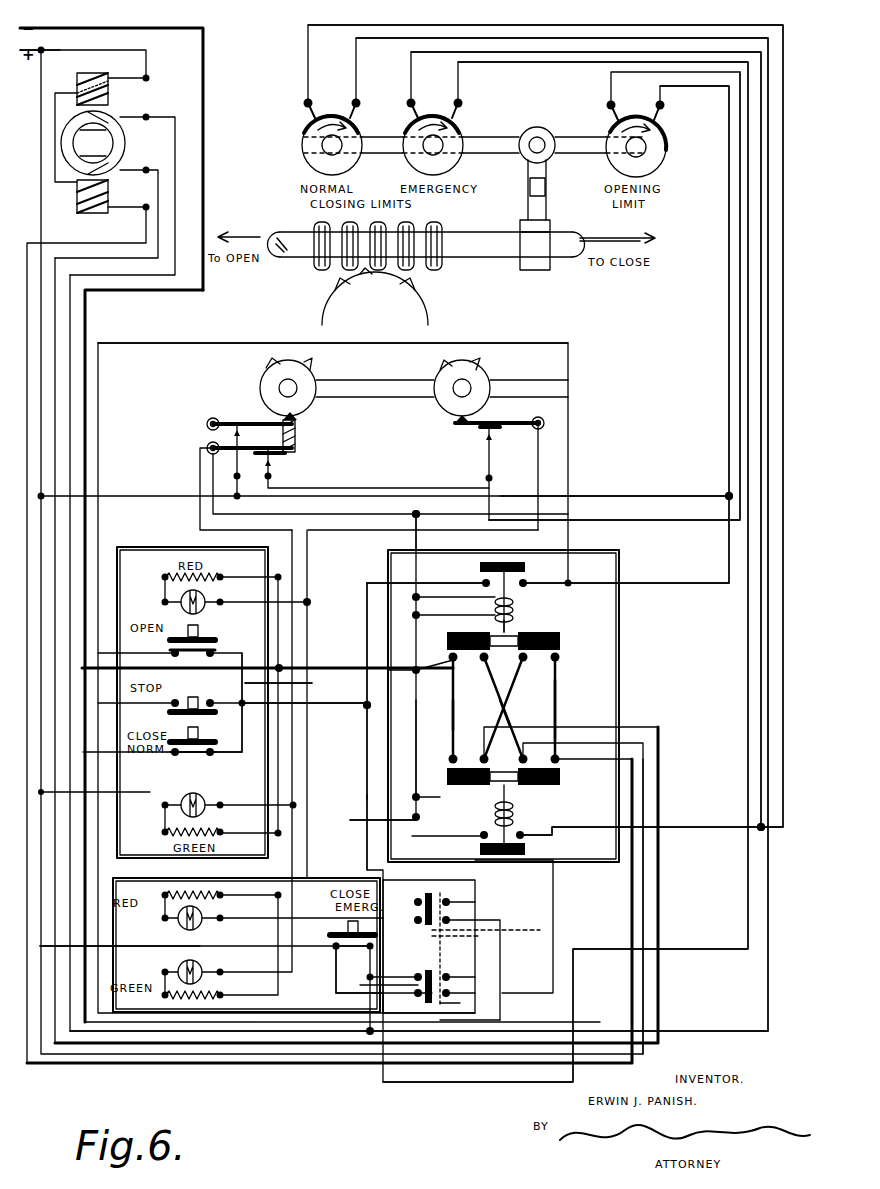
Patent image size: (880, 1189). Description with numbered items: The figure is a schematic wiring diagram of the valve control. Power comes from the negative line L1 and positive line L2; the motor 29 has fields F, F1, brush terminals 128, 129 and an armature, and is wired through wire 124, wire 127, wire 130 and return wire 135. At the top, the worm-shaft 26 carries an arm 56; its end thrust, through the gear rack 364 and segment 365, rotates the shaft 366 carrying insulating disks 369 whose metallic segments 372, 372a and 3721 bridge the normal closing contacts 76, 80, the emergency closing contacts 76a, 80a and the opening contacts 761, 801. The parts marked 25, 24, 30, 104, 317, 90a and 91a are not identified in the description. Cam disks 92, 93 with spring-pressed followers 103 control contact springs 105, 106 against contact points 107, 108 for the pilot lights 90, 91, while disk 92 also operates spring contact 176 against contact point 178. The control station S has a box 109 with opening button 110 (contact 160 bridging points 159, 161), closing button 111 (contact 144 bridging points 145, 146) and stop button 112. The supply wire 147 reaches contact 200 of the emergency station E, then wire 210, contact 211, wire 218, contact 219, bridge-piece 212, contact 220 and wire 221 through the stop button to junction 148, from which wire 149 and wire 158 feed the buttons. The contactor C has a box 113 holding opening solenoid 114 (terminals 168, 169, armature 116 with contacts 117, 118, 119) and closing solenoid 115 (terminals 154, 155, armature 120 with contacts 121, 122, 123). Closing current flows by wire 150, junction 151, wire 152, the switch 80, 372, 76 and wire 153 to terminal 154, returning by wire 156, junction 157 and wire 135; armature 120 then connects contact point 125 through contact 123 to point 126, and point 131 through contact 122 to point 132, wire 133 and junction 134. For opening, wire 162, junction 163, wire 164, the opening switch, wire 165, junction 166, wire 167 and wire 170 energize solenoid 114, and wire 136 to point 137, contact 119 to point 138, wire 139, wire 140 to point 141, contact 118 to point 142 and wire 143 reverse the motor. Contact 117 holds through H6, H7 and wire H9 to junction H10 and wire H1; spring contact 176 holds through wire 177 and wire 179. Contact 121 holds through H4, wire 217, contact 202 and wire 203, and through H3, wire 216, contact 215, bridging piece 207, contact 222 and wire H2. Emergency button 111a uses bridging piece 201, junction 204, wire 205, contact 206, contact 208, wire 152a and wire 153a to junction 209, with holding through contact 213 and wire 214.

The power line L1 is at (111, 150).
The power line L2 is at (48, 52).
The field F is at (92, 79).
The field coil F1 is at (92, 206).
The main current supply wire 147 is at (70, 82).
The brush terminal 129 is at (146, 115).
The armature 30 is at (118, 143).
The brush terminal 128 is at (150, 162).
The motor 29 is at (68, 152).
The wire 124 is at (683, 880).
The wire 127 is at (160, 1075).
The wire 130 is at (215, 1075).
The wire 135 is at (330, 668).
The wire 153 is at (342, 25).
The wire 152 is at (710, 1030).
The wire 153a is at (761, 686).
The wire 152a is at (440, 1095).
The contact 76 is at (293, 106).
The contact 80 is at (369, 107).
The metallic segment 372 is at (333, 115).
The disk 369 is at (308, 150).
The contact 76a is at (391, 95).
The contact 80a is at (459, 104).
The metallic segment 372a is at (434, 115).
The contact 761 is at (600, 106).
The contact 801 is at (680, 103).
The metallic segment 3721 is at (634, 117).
The shaft 366 is at (520, 150).
The segment 365 is at (548, 170).
The gear rack 364 is at (548, 186).
The arm 56 is at (550, 207).
The wire 165 is at (740, 126).
The wire 164 is at (729, 180).
The worm-shaft 26 is at (292, 232).
The worm 25 is at (432, 265).
The worm gear 24 is at (430, 300).
The wire 162 is at (245, 347).
The cam disk 92 is at (316, 380).
The cam disk 93 is at (482, 378).
The contact spring 105 is at (252, 423).
The spring contact 176 is at (207, 450).
The follower 103 is at (296, 422).
The insulating block 104 is at (297, 440).
The contact point 107 is at (237, 437).
The contact spring 106 is at (540, 420).
The contact point 108 is at (489, 442).
The contact point 178 is at (272, 466).
The wire 177 is at (320, 514).
The junction 166 is at (416, 512).
The wire 179 is at (605, 496).
The junction 163 is at (725, 494).
The wire 167 is at (420, 543).
The control station S is at (136, 562).
The box 109 is at (170, 550).
The pilot light 90 is at (207, 592).
The valve-opening button 110 is at (198, 632).
The contact point 161 is at (170, 655).
The contact point 159 is at (212, 652).
The contact 160 is at (193, 656).
The stop button 112 is at (192, 694).
The wire 221 is at (165, 708).
The valve-closing button 111 is at (200, 742).
The contact point 146 is at (172, 760).
The contact 144 is at (190, 758).
The contact point 145 is at (210, 758).
The pilot light 91 is at (205, 806).
The wire 150 is at (83, 752).
The wire H9 is at (367, 600).
The wire 170 is at (416, 628).
The wire 158 is at (298, 684).
The wire H1 is at (367, 708).
The junction H10 is at (366, 712).
The junction 148 is at (268, 705).
The wire 149 is at (268, 745).
The wire H2 is at (367, 795).
The terminal 154 is at (372, 818).
The junction 157 is at (412, 672).
The emergency station E is at (320, 878).
The reversing switch C is at (622, 658).
The box 113 is at (619, 679).
The contact 117 is at (478, 567).
The contact H6 is at (526, 583).
The contact H7 is at (484, 586).
The terminal 168 is at (418, 600).
The terminal 169 is at (418, 618).
The solenoid 114 is at (515, 604).
The armature 116 is at (510, 626).
The contact 119 is at (563, 645).
The contact 118 is at (434, 660).
The wire 143 is at (453, 670).
The contact point 141 is at (486, 662).
The contact point 138 is at (524, 664).
The contact point 137 is at (558, 662).
The contact point 142 is at (471, 708).
The junction 134 is at (452, 678).
The wire 140 is at (496, 688).
The wire 139 is at (510, 690).
The wire 136 is at (555, 700).
The wire 133 is at (452, 716).
The wire 156 is at (416, 750).
The contact point 132 is at (452, 760).
The contact point 131 is at (482, 758).
The contact point 126 is at (522, 758).
The contact point 125 is at (560, 760).
The contact 122 is at (450, 778).
The contact 123 is at (560, 782).
The armature 120 is at (508, 797).
The terminal 155 is at (418, 799).
The solenoid 115 is at (515, 814).
The conductor 317 is at (412, 836).
The contact H4 is at (482, 838).
The contact H3 is at (530, 834).
The contact 121 is at (528, 848).
The junction 209 is at (758, 827).
The red lamp 90a is at (205, 916).
The green lamp 91a is at (205, 966).
The emergency closing button 111a is at (336, 931).
The bridging piece 201 is at (355, 948).
The contact 200 is at (336, 950).
The contact 202 is at (336, 966).
The wire 203 is at (336, 985).
The junction 204 is at (360, 1000).
The wire 217 is at (380, 897).
The contact 211 is at (418, 906).
The contact 206 is at (418, 975).
The bridging piece 207 is at (446, 972).
The wire 216 is at (553, 894).
The wire 218 is at (446, 900).
The contact 219 is at (470, 898).
The contact 220 is at (460, 918).
The bridge-piece 212 is at (489, 928).
The contact 213 is at (480, 940).
The contact 222 is at (460, 980).
The contact 215 is at (460, 1002).
The wire 210 is at (345, 1043).
The junction 151 is at (392, 1013).
The wire 205 is at (430, 1003).
The wire 214 is at (446, 997).
The contact 208 is at (500, 1020).